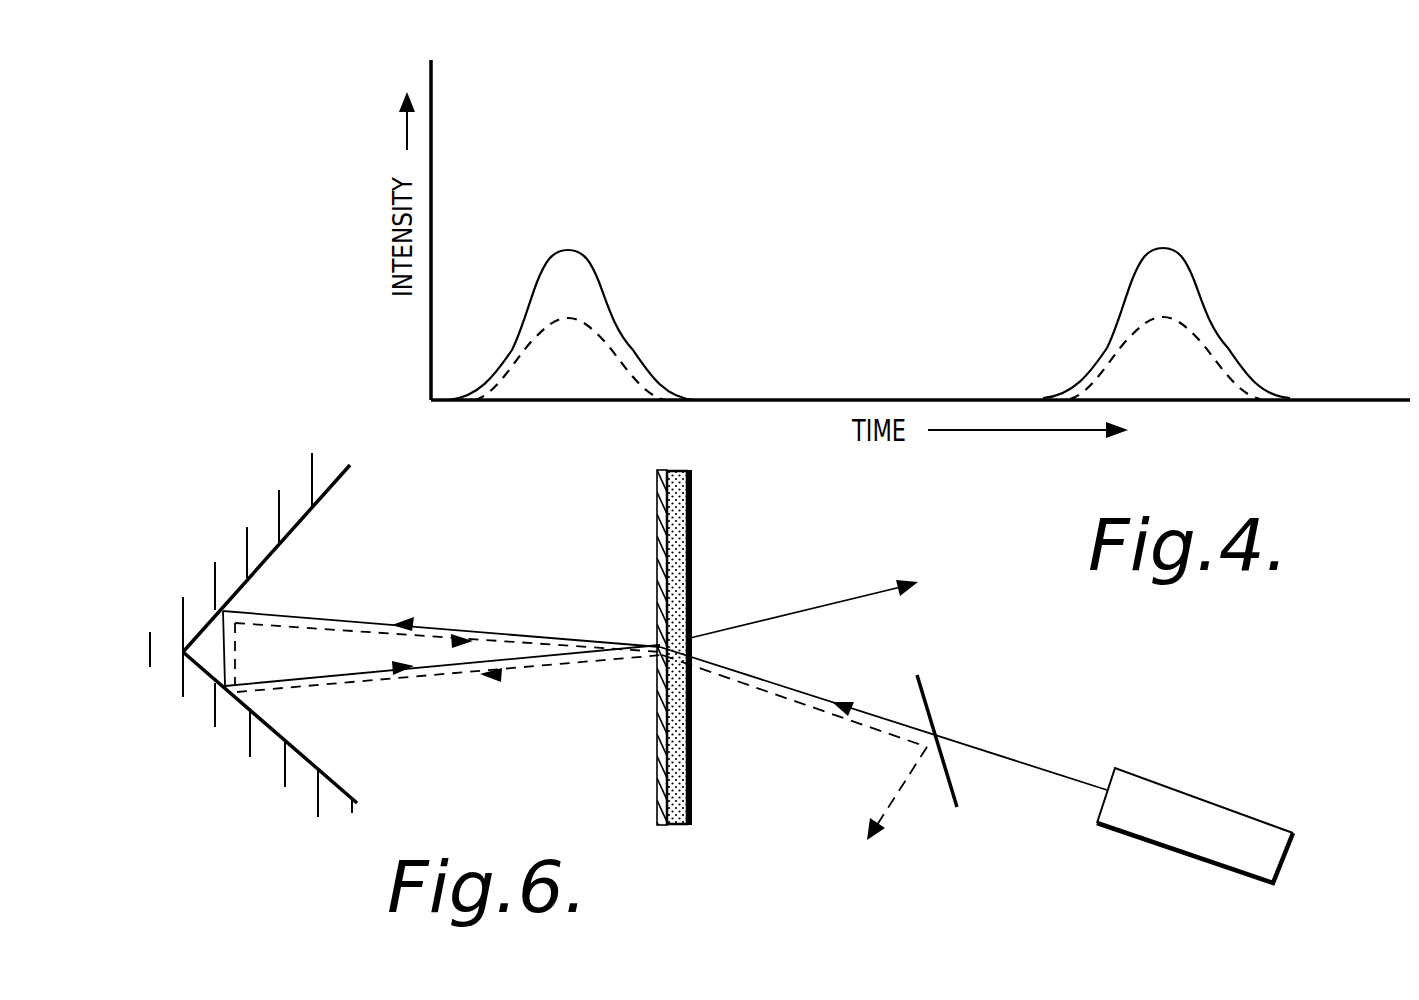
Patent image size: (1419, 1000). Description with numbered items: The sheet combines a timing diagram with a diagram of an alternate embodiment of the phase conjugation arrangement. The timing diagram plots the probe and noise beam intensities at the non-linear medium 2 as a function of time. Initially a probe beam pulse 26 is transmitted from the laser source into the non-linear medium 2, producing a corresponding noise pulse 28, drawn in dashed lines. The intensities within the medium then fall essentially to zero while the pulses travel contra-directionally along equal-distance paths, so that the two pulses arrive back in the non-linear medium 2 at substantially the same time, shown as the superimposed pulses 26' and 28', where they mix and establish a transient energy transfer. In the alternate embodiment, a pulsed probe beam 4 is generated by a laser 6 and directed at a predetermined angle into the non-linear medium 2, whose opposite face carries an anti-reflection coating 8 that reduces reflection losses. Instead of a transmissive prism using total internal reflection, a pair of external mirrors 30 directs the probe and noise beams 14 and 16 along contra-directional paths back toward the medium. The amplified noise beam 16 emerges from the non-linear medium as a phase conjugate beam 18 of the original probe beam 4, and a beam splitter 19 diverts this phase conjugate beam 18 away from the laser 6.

In FIG. 6, the non-linear medium 2 is at (656, 490).
In FIG. 6, the probe beam 4 is at (1022, 762).
In FIG. 6, the laser 6 is at (1172, 788).
In FIG. 6, the anti-reflection coating 8 is at (687, 493).
In FIG. 6, the probe beam 14 is at (437, 665).
In FIG. 6, the noise beam 16 is at (550, 667).
In FIG. 6, the phase conjugate beam 18 is at (872, 726).
In FIG. 6, the beam splitter 19 is at (922, 688).
In FIG. 4, the probe beam pulse 26 is at (571, 306).
In FIG. 4, the noise pulse 28 is at (589, 350).
In FIG. 4, the returned probe pulse 26' is at (1166, 318).
In FIG. 4, the returned noise pulse 28' is at (1192, 354).
In FIG. 6, the external mirrors 30 is at (328, 493).